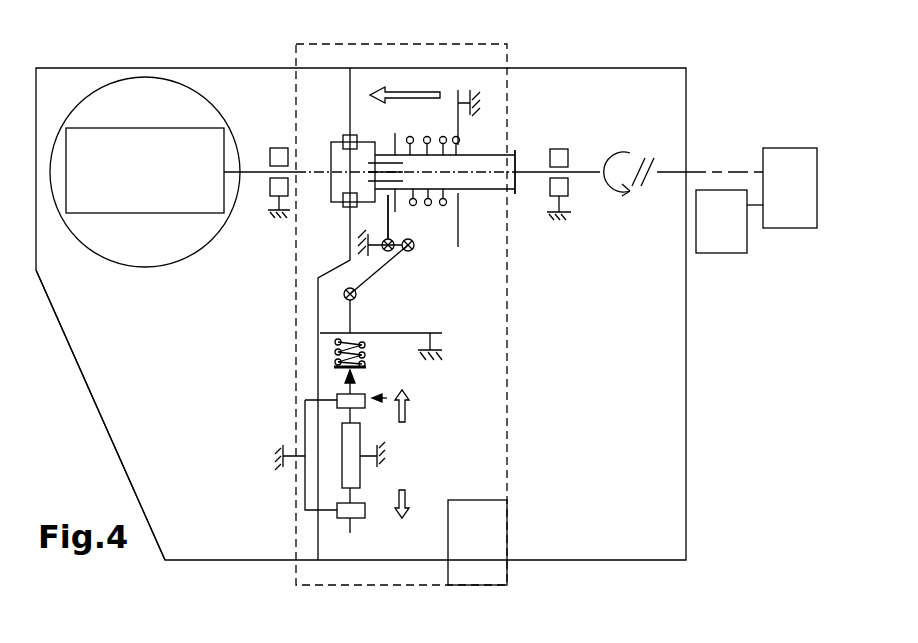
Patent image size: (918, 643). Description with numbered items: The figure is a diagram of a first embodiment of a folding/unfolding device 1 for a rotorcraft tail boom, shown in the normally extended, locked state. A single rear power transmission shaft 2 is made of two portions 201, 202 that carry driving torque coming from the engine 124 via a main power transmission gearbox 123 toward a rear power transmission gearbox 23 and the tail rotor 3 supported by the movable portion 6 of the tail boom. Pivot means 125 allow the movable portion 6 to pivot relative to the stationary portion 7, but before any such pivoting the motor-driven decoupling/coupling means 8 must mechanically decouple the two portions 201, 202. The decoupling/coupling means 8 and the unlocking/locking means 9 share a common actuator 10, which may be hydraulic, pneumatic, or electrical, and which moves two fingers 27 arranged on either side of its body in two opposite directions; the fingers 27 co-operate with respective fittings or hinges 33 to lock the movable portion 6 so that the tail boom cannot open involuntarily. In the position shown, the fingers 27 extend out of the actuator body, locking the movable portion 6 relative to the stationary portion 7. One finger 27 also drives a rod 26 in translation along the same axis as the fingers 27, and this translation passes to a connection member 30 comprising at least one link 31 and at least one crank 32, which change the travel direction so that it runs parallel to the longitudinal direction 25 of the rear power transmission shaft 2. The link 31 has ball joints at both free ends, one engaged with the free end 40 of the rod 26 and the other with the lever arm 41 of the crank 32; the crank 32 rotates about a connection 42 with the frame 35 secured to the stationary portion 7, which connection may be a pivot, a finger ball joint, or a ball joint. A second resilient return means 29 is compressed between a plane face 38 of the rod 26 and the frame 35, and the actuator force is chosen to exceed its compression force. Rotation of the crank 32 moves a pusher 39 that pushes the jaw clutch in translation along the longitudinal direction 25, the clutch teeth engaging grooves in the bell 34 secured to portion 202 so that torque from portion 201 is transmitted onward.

The folding/unfolding device 1 is at (486, 592).
The rear power transmission shaft 2 is at (541, 162).
The tail rotor 3 is at (150, 88).
The movable portion 6 is at (210, 540).
The stationary portion 7 is at (637, 548).
The decoupling/coupling means 8 is at (376, 215).
The unlocking/locking means 9 is at (410, 408).
The common actuator 10 is at (355, 470).
The rear power transmission gearbox 23 is at (108, 147).
The longitudinal direction 25 is at (748, 168).
The rod 26 is at (335, 368).
The fingers 27 is at (350, 416).
The second resilient return means 29 is at (395, 384).
The connection member 30 is at (432, 250).
The link 31 is at (386, 268).
The crank 32 is at (402, 233).
The fittings or hinges 33 is at (337, 397).
The bell 34 is at (343, 136).
The frame 35 is at (459, 207).
The plane face 38 is at (335, 348).
The pusher 39 is at (386, 196).
The free end 40 is at (345, 283).
The lever arm 41 is at (409, 255).
The connection 42 is at (386, 233).
The main power transmission gearbox 123 is at (790, 188).
The engine 124 is at (729, 221).
The pivot means 125 is at (477, 542).
The portion of the rear power transmission shaft 201 is at (513, 170).
The portion of the rear power transmission shaft 202 is at (257, 168).